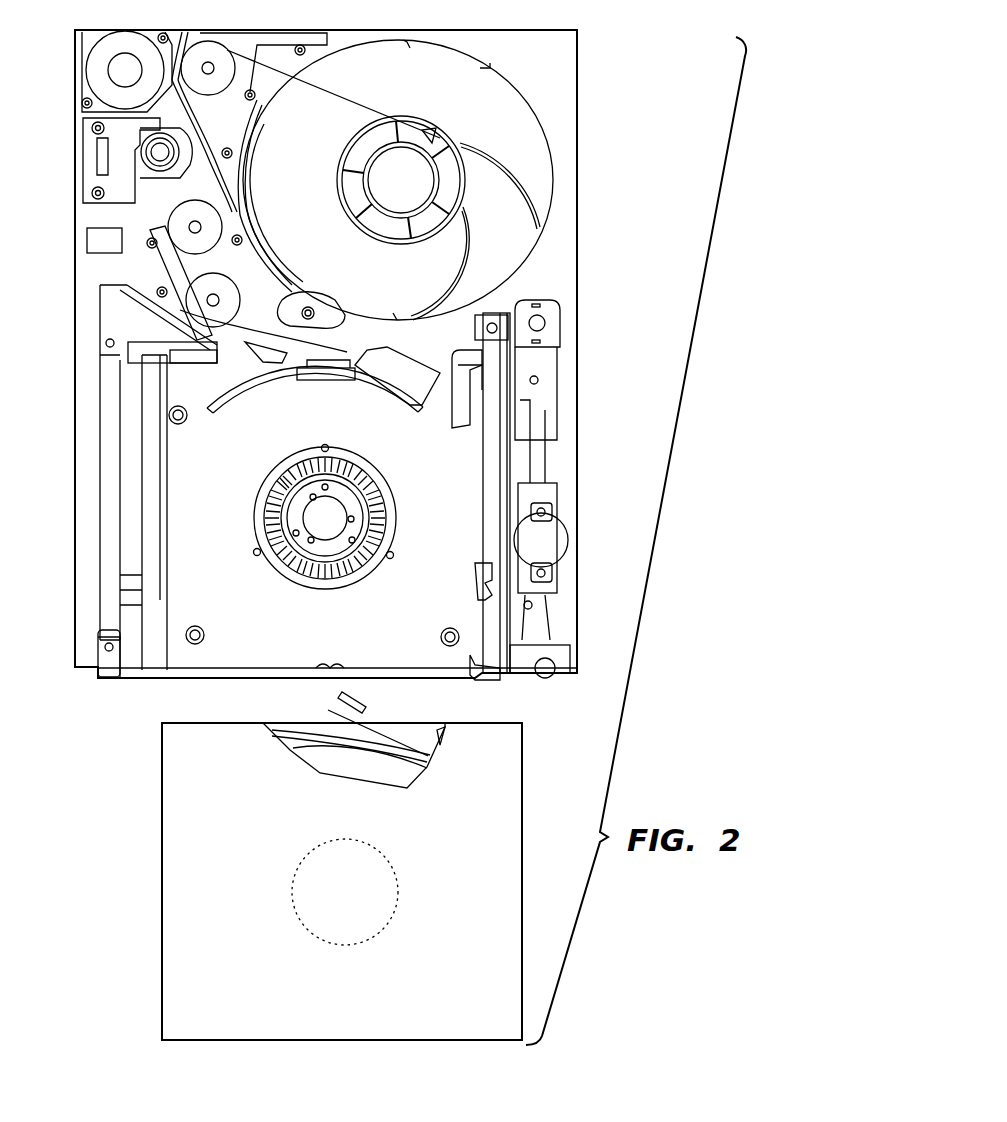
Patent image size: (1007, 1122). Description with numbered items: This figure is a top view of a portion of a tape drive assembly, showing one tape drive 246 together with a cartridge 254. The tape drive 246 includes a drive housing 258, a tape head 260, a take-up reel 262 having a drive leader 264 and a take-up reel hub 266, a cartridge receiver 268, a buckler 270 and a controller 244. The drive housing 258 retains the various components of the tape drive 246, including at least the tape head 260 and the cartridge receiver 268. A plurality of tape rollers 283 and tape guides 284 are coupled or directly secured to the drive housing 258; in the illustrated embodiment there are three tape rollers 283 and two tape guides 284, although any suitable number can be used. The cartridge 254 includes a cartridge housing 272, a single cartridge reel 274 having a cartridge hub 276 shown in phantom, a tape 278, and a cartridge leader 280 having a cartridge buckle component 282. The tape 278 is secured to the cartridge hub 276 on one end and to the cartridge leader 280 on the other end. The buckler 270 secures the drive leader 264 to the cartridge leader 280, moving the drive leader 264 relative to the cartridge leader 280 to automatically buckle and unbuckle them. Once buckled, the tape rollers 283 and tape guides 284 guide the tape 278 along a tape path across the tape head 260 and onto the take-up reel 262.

The controller 244 is at (87, 247).
The tape drive 246 is at (580, 308).
The cartridge 254 is at (505, 775).
The drive housing 258 is at (578, 205).
The tape head 260 is at (203, 140).
The take-up reel 262 is at (517, 108).
The drive leader 264 is at (243, 345).
The take-up reel hub 266 is at (433, 134).
The cartridge receiver 268 is at (480, 660).
The buckler 270 is at (298, 322).
The cartridge housing 272 is at (522, 830).
The cartridge reel 274 is at (320, 765).
The cartridge hub 276 is at (398, 892).
The tape 278 is at (430, 737).
The cartridge leader 280 is at (340, 716).
The cartridge buckle component 282 is at (362, 706).
The tape rollers 283 is at (214, 290).
The tape guides 284 is at (180, 310).